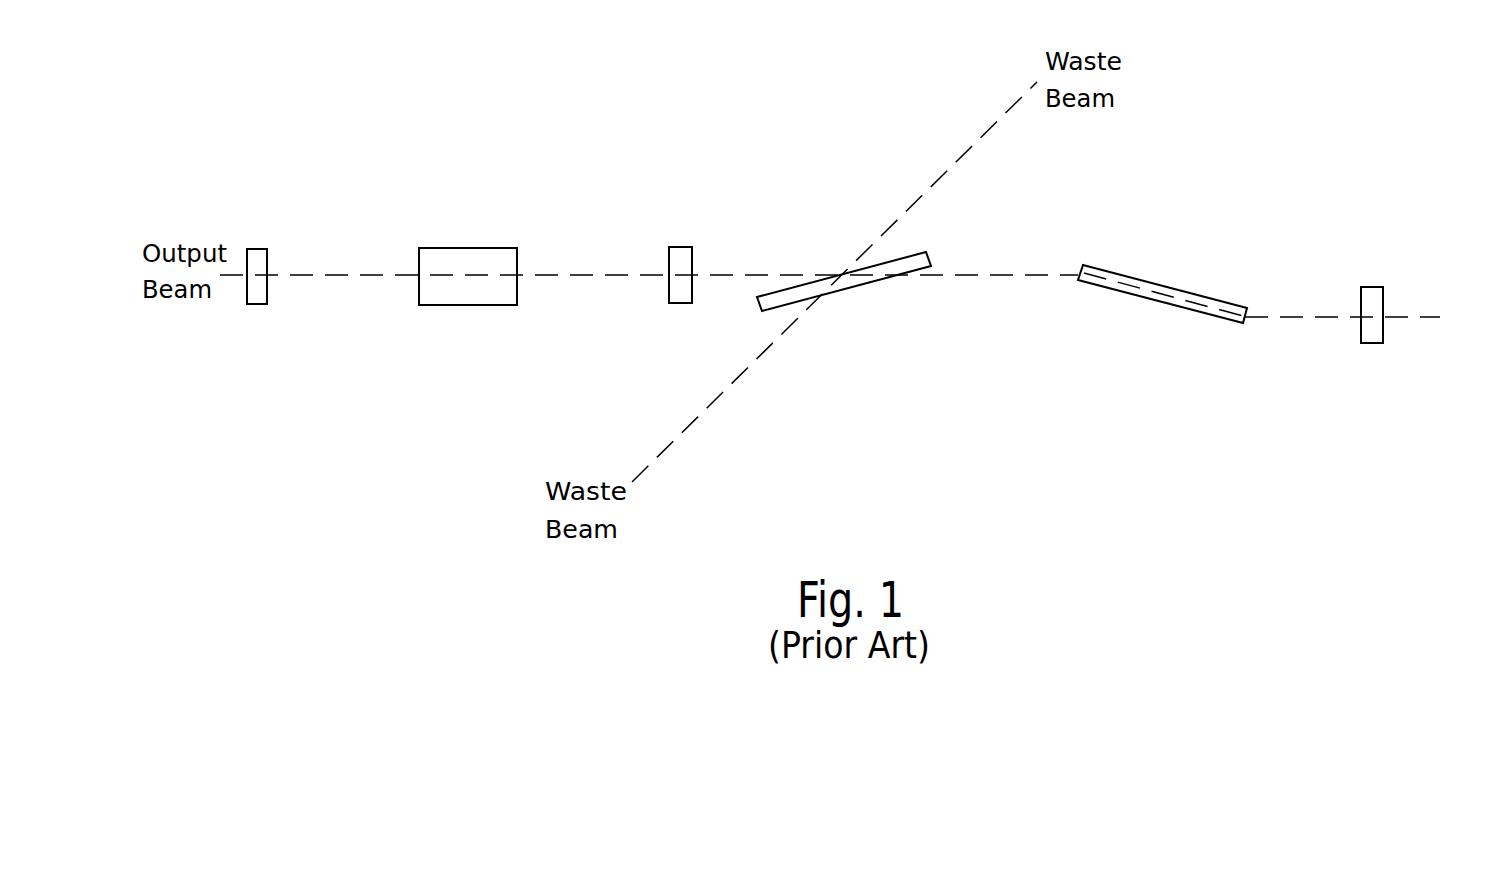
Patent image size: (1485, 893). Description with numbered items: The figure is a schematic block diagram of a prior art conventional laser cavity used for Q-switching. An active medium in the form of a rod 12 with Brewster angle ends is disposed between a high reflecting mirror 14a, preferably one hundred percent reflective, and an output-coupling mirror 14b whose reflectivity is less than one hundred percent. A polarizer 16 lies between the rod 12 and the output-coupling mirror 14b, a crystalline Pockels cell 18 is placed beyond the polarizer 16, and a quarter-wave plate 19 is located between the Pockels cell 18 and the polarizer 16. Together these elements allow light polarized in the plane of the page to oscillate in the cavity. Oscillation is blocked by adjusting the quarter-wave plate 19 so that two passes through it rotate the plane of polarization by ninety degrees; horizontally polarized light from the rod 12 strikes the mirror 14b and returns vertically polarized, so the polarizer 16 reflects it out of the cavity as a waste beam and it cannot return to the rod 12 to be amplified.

The rod 12 is at (1170, 303).
The mirror 14a is at (1367, 286).
The output-coupling mirror 14b is at (254, 247).
The polarizer 16 is at (862, 287).
The Pockels cell 18 is at (477, 247).
The quarter-wave plate 19 is at (693, 257).